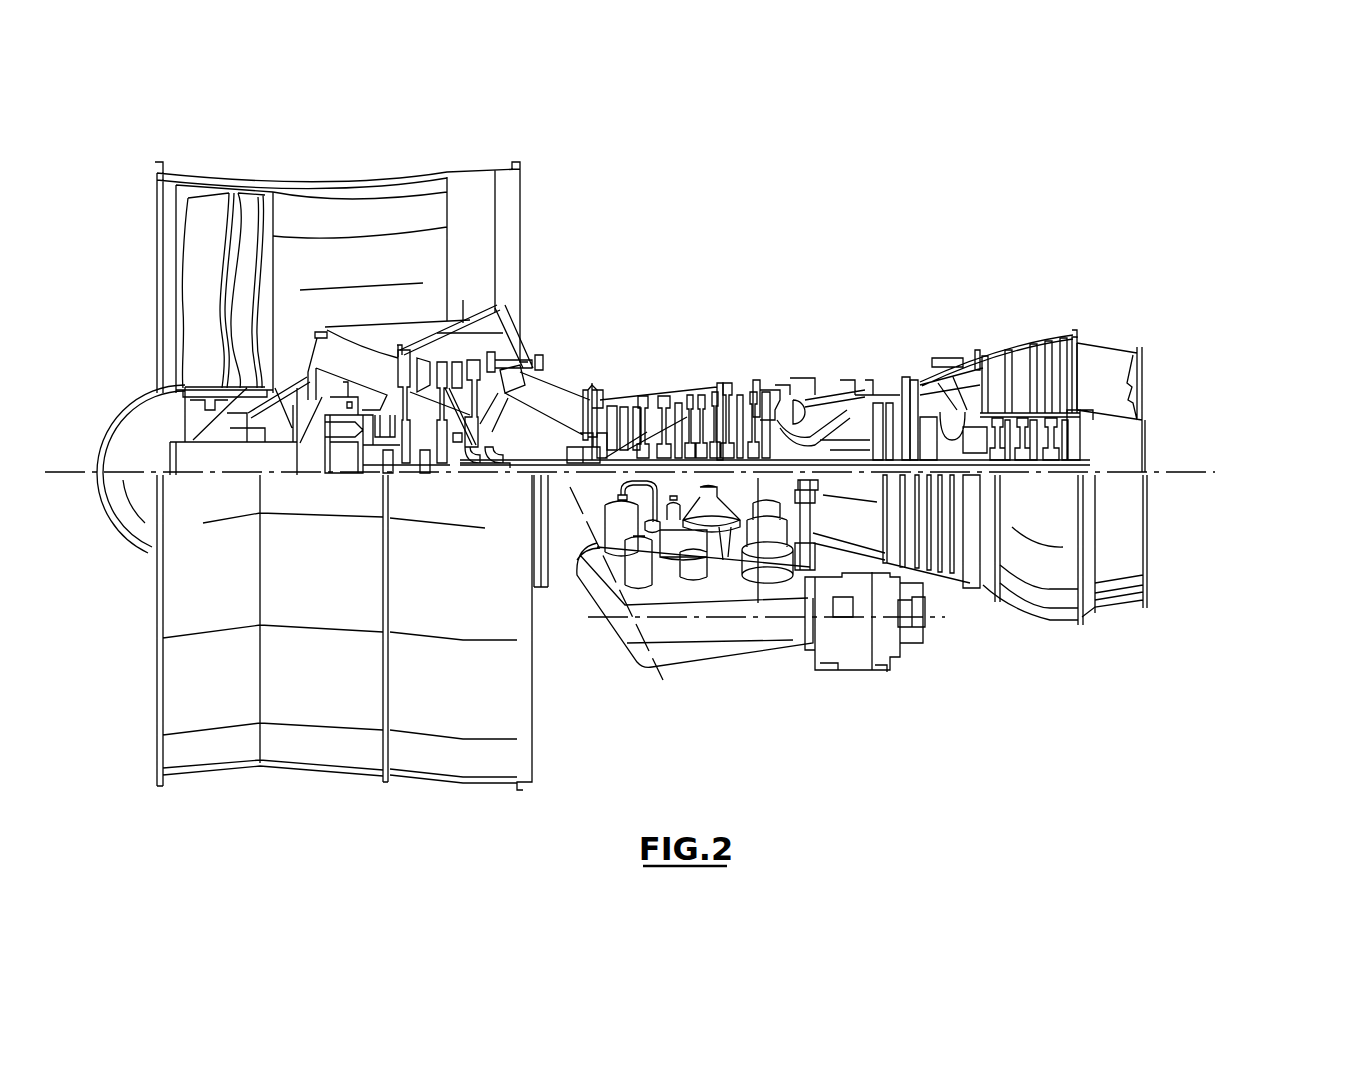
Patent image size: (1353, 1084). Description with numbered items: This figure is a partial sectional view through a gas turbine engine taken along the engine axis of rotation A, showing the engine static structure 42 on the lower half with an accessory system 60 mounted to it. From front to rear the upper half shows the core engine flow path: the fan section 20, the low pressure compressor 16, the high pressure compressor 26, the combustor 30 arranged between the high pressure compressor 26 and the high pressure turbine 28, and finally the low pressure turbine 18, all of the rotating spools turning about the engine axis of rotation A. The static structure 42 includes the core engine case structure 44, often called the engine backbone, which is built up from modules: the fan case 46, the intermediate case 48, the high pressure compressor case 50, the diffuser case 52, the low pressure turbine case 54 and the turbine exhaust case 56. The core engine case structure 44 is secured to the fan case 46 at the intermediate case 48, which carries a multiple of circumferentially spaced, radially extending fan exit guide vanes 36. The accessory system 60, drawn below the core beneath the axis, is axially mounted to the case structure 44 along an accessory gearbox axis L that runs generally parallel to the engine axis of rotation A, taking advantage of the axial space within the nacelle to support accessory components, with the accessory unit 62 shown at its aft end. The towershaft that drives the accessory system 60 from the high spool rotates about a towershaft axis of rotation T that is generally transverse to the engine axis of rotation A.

The fan section 20 is at (318, 173).
The low pressure compressor 16 is at (591, 370).
The fan exit guide vanes 36 is at (477, 212).
The high pressure compressor 26 is at (750, 367).
The combustor 30 is at (868, 367).
The high pressure turbine 28 is at (912, 367).
The low pressure turbine 18 is at (975, 347).
The engine static structure 42 is at (1197, 645).
The fan case 46 is at (283, 742).
The intermediate case 48 is at (470, 748).
The high pressure compressor case 50 is at (583, 592).
The accessory system 60 is at (770, 672).
The accessory unit 62 is at (855, 692).
The diffuser case 52 is at (852, 522).
The low pressure turbine case 54 is at (940, 577).
The core engine case structure 44 is at (1020, 640).
The turbine exhaust case 56 is at (1098, 617).
The engine axis of rotation A is at (1208, 473).
The towershaft axis of rotation T is at (650, 712).
The accessory gearbox axis L is at (706, 618).